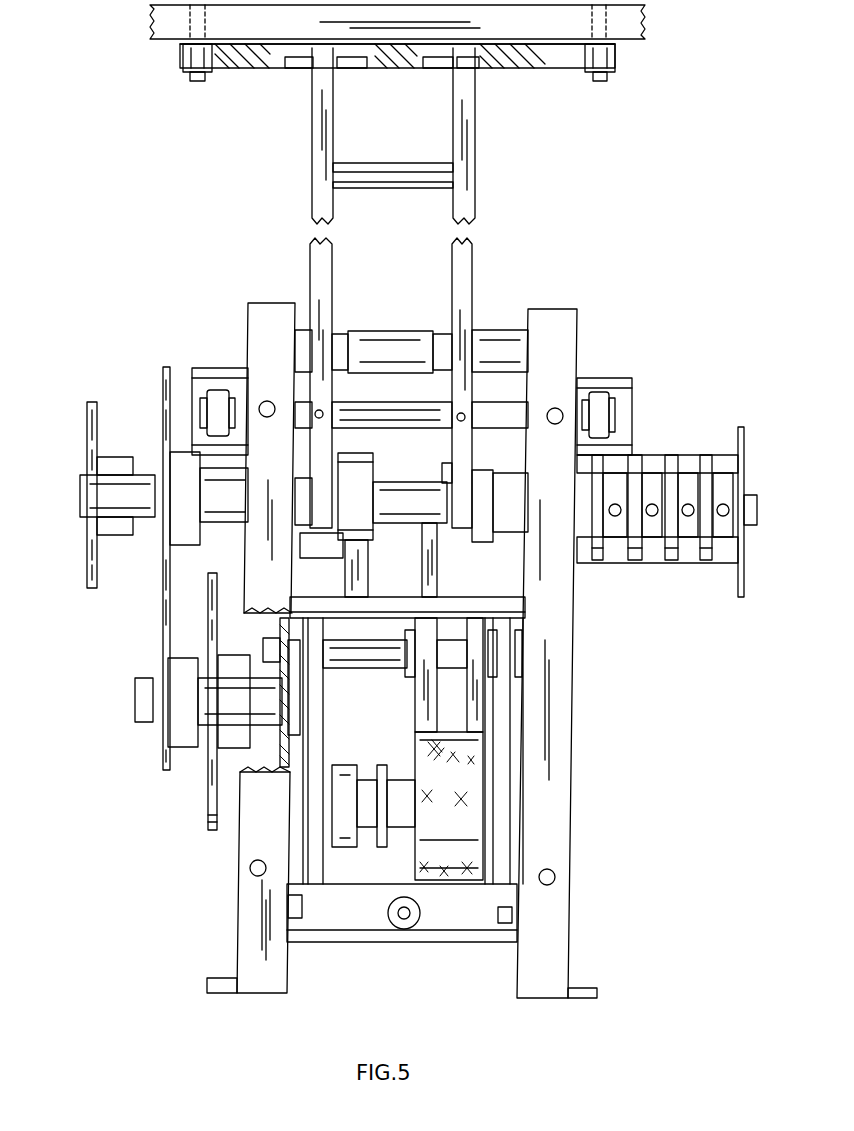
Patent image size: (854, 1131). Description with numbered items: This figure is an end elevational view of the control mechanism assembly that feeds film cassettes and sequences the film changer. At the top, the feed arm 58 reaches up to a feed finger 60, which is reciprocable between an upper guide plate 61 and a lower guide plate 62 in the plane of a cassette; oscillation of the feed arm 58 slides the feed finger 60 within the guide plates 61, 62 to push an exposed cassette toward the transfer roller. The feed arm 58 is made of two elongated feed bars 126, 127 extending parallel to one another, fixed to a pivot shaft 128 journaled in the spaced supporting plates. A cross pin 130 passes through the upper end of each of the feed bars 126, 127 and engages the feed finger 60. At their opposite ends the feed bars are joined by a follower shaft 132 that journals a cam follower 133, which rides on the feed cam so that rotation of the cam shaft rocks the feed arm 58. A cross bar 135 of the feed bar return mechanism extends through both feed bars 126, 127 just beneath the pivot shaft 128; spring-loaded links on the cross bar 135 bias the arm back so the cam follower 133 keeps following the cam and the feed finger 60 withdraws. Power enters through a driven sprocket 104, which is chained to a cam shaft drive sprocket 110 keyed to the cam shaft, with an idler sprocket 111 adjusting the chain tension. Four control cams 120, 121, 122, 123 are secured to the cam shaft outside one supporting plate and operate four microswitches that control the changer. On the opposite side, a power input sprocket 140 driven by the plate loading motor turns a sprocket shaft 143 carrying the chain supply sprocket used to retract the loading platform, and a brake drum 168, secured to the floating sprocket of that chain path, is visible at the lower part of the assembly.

The feed arm 58 is at (482, 191).
The feed finger 60 is at (258, 68).
The upper guide plate 61 is at (228, 32).
The lower guide plate 62 is at (218, 72).
The driven sprocket 104 is at (208, 800).
The cam shaft drive sprocket 110 is at (163, 388).
The idler sprocket 111 is at (160, 750).
The control cam 120 is at (707, 562).
The control cam 121 is at (672, 562).
The control cam 122 is at (636, 562).
The control cam 123 is at (598, 562).
The feed bar 126 is at (468, 262).
The feed bar 127 is at (314, 256).
The pivot shaft 128 is at (408, 331).
The cross pin 130 is at (428, 68).
The follower shaft 132 is at (402, 510).
The cam follower 133 is at (373, 470).
The cross bar 135 is at (422, 408).
The power input sprocket 140 is at (87, 424).
The sprocket shaft 143 is at (92, 494).
The brake drum 168 is at (445, 878).